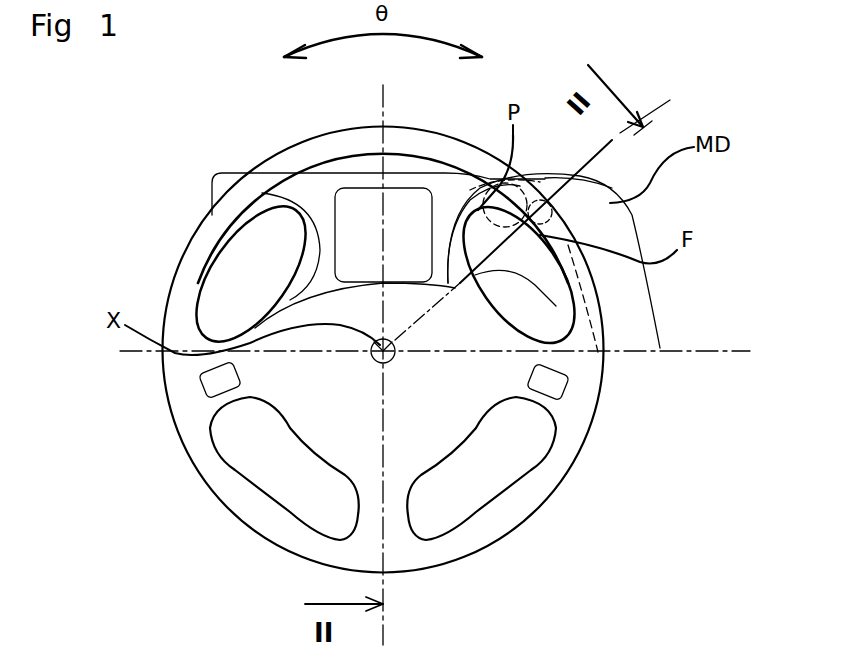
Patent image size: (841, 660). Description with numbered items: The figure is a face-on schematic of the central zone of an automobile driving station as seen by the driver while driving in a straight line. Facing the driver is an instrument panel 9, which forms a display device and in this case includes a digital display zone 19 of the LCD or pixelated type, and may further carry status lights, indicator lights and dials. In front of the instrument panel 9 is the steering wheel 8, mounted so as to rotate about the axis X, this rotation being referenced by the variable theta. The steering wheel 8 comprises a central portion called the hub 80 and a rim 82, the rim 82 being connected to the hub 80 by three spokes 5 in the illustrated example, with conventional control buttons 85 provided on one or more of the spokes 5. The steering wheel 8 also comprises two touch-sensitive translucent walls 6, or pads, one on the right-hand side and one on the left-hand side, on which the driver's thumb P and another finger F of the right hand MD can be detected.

The spokes 5 is at (228, 400).
The translucent walls 6 is at (540, 315).
The steering wheel 8 is at (175, 218).
The instrument panel 9 is at (216, 173).
The digital display zone 19 is at (432, 152).
The hub 80 is at (437, 397).
The rim 82 is at (283, 144).
The control buttons 85 is at (556, 377).